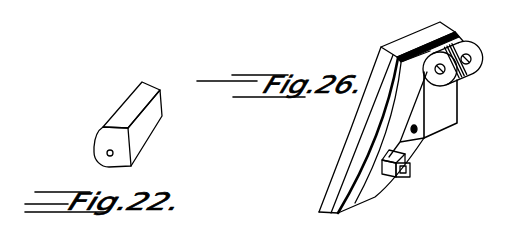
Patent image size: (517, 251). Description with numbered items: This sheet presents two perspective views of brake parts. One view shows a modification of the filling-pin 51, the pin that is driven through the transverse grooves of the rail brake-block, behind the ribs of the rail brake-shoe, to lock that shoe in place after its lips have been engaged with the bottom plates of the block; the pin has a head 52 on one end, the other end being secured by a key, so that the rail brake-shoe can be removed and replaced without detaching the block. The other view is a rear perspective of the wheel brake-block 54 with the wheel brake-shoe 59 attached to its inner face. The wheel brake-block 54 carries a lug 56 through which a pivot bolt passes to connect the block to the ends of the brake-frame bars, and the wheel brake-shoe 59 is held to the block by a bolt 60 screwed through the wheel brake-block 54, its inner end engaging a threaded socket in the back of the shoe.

In FIG. 22, the filling-pin 51 is at (136, 99).
In FIG. 22, the head 52 is at (103, 127).
In FIG. 26, the wheel brake-block 54 is at (362, 191).
In FIG. 26, the lug 56 is at (454, 112).
In FIG. 26, the wheel brake-shoe 59 is at (343, 155).
In FIG. 26, the bolt 60 is at (411, 169).